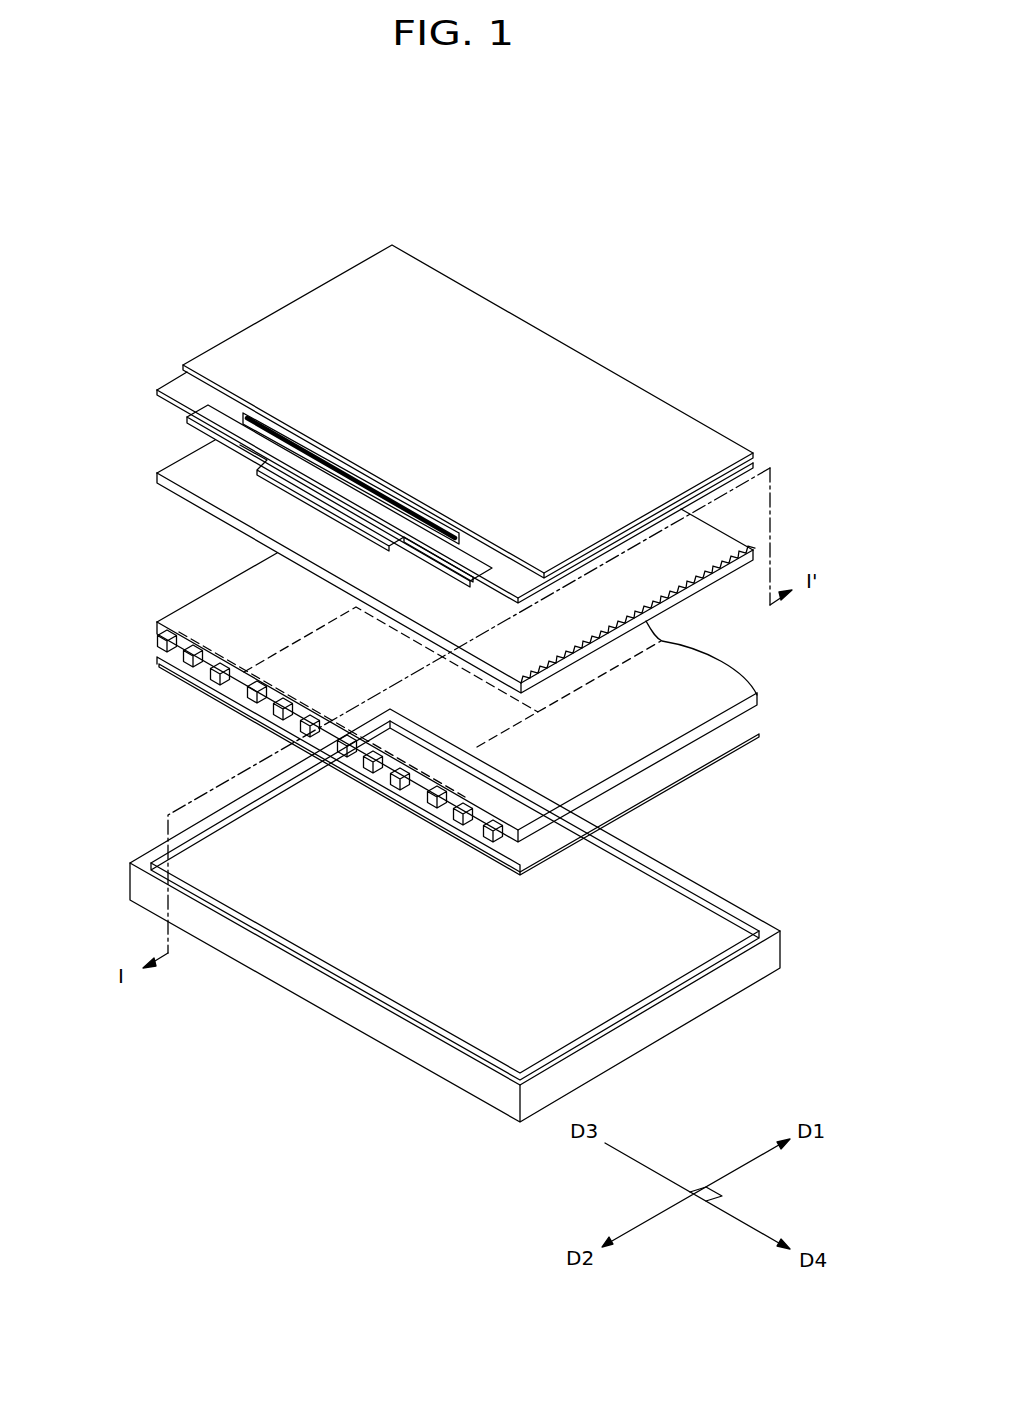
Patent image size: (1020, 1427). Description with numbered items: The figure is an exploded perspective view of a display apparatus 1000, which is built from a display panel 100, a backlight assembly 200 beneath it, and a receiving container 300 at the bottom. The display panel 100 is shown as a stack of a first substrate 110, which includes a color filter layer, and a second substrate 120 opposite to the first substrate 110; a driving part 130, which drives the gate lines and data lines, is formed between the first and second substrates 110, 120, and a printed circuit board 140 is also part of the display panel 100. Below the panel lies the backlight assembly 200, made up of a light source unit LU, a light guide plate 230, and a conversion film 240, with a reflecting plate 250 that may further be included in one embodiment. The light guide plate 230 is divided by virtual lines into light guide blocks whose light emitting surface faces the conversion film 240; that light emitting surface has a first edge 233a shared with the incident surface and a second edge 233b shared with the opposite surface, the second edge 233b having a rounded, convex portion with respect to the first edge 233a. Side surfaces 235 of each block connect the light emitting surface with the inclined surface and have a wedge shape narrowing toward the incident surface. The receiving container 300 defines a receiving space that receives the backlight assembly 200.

The display apparatus 1000 is at (311, 213).
The display panel 100 is at (93, 349).
The first substrate 110 is at (158, 390).
The second substrate 120 is at (182, 366).
The driving part 130 is at (186, 416).
The printed circuit board 140 is at (239, 434).
The backlight assembly 200 is at (93, 515).
The conversion film 240 is at (164, 477).
The light guide plate 230 is at (164, 621).
The light source unit LU is at (163, 639).
The reflecting plate 250 is at (157, 658).
The first edge 233a is at (503, 843).
The second edge 233b is at (740, 668).
The side surfaces 235 is at (746, 712).
The receiving container 300 is at (748, 908).